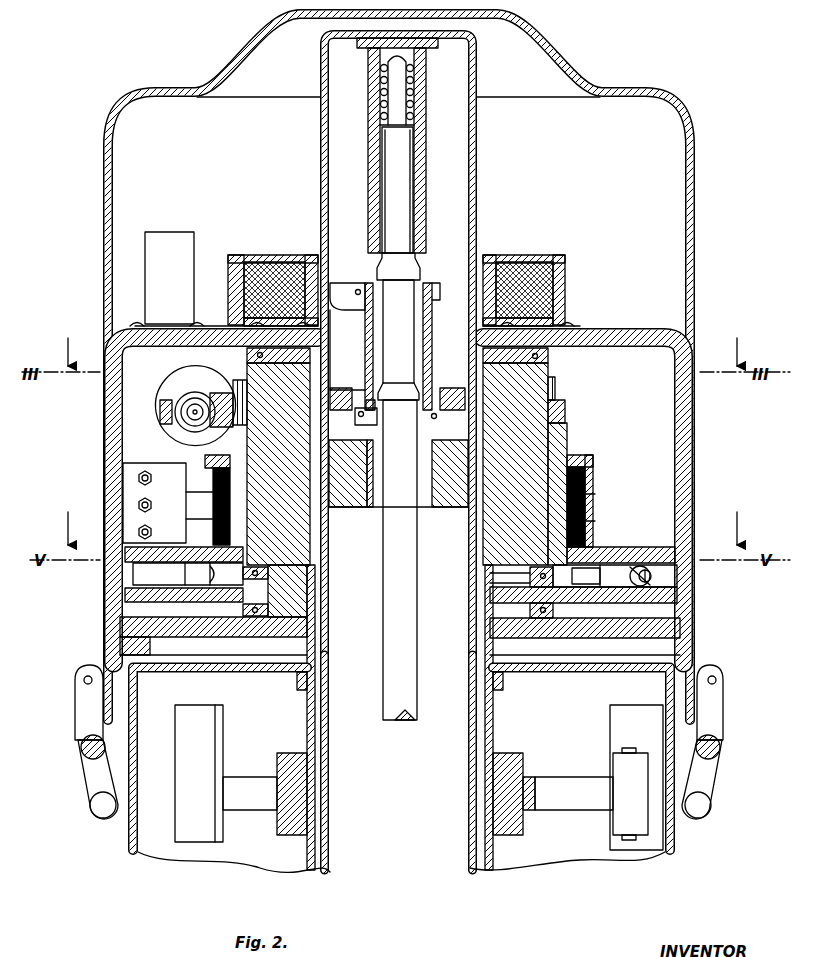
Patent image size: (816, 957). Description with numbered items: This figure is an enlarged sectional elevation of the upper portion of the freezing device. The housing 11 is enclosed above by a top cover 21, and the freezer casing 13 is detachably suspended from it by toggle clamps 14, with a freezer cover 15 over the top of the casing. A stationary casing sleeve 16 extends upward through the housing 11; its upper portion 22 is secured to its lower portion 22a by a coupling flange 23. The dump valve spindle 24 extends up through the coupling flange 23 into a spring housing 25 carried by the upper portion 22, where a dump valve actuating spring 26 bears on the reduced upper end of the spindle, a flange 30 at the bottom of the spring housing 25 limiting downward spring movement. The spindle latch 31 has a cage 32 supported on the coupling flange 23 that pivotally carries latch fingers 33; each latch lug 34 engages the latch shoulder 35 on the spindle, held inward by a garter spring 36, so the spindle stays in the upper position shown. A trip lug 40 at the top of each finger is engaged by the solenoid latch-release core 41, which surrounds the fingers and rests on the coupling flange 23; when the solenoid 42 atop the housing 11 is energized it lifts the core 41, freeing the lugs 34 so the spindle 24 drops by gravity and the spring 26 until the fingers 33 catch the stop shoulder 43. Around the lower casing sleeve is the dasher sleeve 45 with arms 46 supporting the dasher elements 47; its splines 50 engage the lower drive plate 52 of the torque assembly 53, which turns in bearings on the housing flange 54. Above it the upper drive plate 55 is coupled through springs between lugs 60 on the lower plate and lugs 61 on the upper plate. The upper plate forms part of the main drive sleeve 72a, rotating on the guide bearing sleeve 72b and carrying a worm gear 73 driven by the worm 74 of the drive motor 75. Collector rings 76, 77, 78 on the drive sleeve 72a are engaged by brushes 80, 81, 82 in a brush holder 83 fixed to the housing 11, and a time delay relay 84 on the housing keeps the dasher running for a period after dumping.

The housing 11 is at (695, 452).
The freezer casing 13 is at (676, 846).
The toggle clamps 14 is at (80, 715).
The freezer cover 15 is at (285, 668).
The casing sleeve 16 is at (330, 752).
The top cover 21 is at (695, 228).
The upper portion of casing sleeve 22 is at (478, 170).
The lower portion of casing sleeve 22a is at (485, 640).
The coupling flange 23 is at (455, 500).
The dump valve spindle 24 is at (398, 180).
The spring housing 25 is at (370, 147).
The dump valve actuating spring 26 is at (380, 98).
The flange 30 is at (380, 250).
The spindle latch 31 is at (432, 350).
The cage 32 is at (430, 366).
The latch fingers 33 is at (362, 353).
The latch lug 34 is at (377, 416).
The latch shoulder 35 is at (398, 396).
The garter spring 36 is at (432, 422).
The trip lug 40 is at (335, 296).
The solenoid latch-release core 41 is at (455, 396).
The solenoid 42 is at (244, 292).
The stop shoulder 43 is at (420, 280).
The dasher sleeve 45 is at (307, 848).
The arms 46 is at (258, 792).
The dasher elements 47 is at (215, 732).
The splines 50 is at (300, 590).
The lower drive plate 52 is at (680, 596).
The torque assembly 53 is at (652, 576).
The housing flange 54 is at (680, 630).
The upper drive plate 55 is at (678, 575).
The lugs 60 is at (652, 565).
The lugs 61 is at (140, 575).
The main drive sleeve 72a is at (520, 470).
The guide bearing sleeve 72b is at (540, 445).
The worm gear 73 is at (565, 415).
The worm 74 is at (192, 414).
The drive motor 75 is at (212, 385).
The collector ring 76 is at (586, 480).
The collector ring 77 is at (586, 510).
The collector ring 78 is at (586, 540).
The brush 80 is at (205, 478).
The brush 81 is at (205, 505).
The brush 82 is at (205, 532).
The brush holder 83 is at (135, 470).
The time delay relay 84 is at (180, 235).